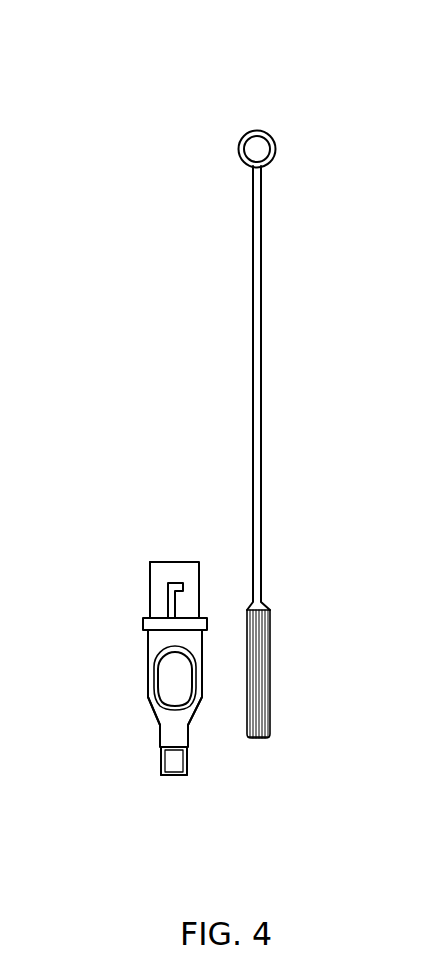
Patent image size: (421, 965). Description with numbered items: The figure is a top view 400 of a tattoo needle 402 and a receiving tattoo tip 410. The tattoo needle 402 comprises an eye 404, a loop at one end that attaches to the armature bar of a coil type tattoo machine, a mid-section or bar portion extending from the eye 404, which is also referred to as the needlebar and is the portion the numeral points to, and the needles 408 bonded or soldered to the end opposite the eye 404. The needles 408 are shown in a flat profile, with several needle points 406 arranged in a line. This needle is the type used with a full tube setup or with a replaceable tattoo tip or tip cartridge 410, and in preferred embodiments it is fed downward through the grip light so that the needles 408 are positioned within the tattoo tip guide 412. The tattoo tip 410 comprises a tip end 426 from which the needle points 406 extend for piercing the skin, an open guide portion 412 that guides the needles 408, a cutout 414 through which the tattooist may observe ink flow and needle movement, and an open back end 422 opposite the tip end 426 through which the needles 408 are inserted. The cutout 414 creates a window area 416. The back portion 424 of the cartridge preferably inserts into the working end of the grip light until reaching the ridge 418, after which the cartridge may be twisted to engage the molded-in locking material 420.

The top view 400 is at (294, 108).
The tattoo needle 402 is at (253, 333).
The eye 404 is at (238, 158).
The needle points 406 is at (268, 738).
The needles 408 is at (269, 657).
The tattoo tip 410 is at (148, 653).
The open guide portion 412 is at (170, 763).
The cutout 414 is at (154, 709).
The window area 416 is at (173, 675).
The ridge 418 is at (143, 623).
The molded-in locking material 420 is at (168, 593).
The open back end 422 is at (170, 562).
The back portion 424 is at (149, 577).
The tip end 426 is at (175, 775).